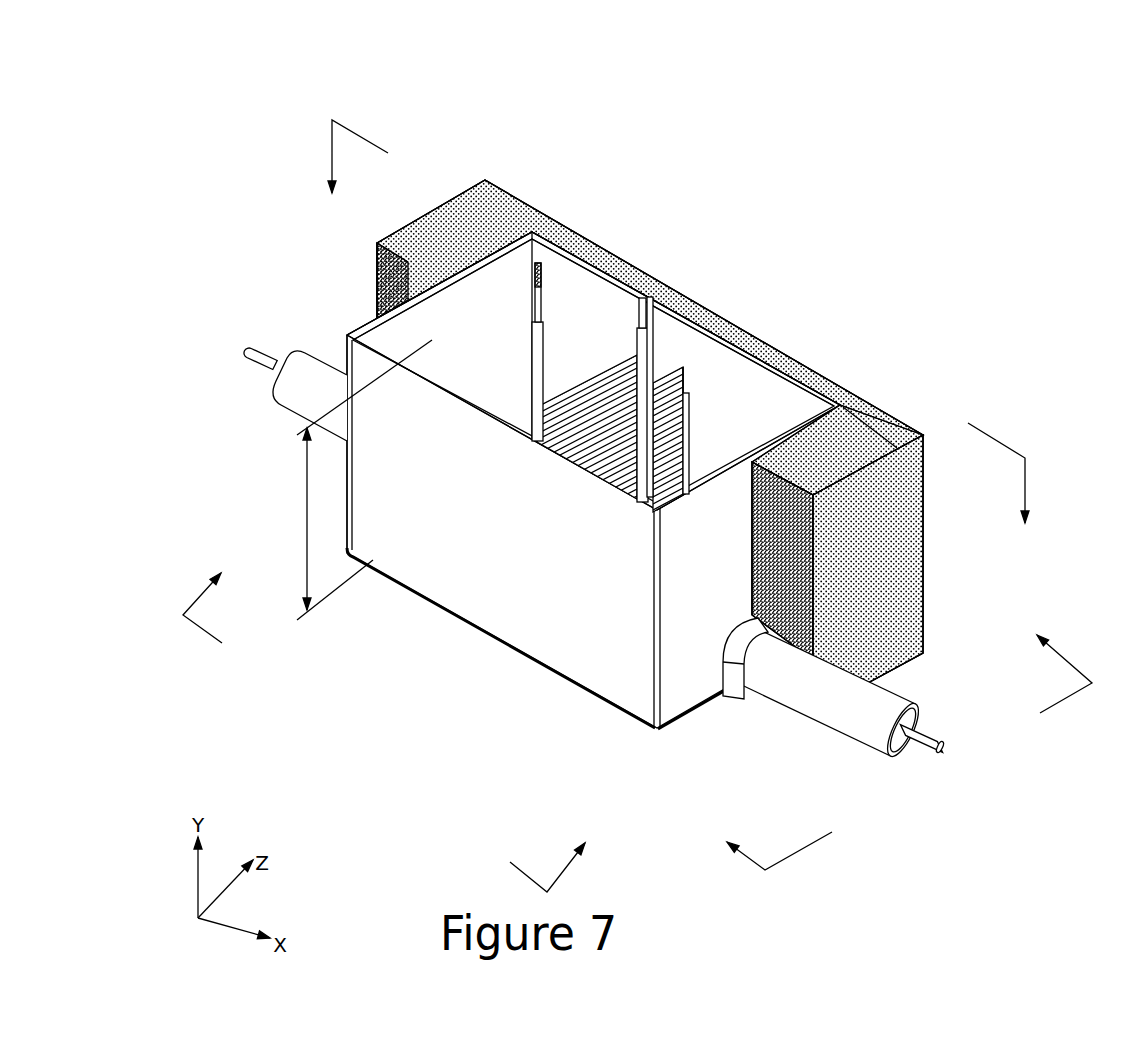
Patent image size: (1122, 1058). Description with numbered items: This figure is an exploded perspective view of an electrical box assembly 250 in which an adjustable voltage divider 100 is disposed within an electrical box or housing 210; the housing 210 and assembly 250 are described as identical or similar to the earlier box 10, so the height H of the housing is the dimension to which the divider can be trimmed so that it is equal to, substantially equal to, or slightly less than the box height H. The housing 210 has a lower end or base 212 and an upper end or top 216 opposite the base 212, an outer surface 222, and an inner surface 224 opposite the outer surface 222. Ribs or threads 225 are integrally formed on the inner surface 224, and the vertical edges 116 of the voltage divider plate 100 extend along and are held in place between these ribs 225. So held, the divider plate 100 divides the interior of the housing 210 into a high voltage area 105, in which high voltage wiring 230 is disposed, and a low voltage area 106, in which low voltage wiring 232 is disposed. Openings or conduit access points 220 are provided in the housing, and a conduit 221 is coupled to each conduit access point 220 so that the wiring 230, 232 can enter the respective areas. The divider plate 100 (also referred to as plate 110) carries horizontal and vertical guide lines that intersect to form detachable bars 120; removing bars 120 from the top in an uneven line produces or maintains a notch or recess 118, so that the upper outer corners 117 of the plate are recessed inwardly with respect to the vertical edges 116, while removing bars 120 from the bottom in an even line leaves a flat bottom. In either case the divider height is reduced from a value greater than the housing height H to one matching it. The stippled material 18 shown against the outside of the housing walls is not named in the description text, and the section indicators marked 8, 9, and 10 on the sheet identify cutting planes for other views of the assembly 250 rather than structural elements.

The insulation 18 is at (870, 428).
The voltage divider plate 100 is at (610, 431).
The high voltage area 105 is at (722, 458).
The low voltage area 106 is at (416, 343).
The voltage divider plate 110 is at (587, 451).
The detachable bars 120 is at (636, 439).
The vertical edges 116 is at (686, 392).
The upper outer corners 117 is at (531, 396).
The notch or recess 118 is at (689, 353).
The electrical box or housing 210 is at (557, 634).
The lower end, edge, or base 212 is at (613, 707).
The upper end, edge, or top 216 is at (450, 386).
The openings or conduit access points 220 is at (748, 637).
The conduit 221 is at (603, 565).
The outer surface 222 is at (484, 556).
The inner surface 224 is at (729, 428).
The ribs or threads 225 is at (790, 375).
The high voltage wiring 230 is at (653, 328).
The low voltage wiring 232 is at (545, 278).
The assembly 250 is at (200, 116).
The height of the housing H is at (307, 463).
The section line FIG. 8 is at (681, 321).
The section line FIG. 9 is at (387, 732).
The electrical box or housing 10 is at (909, 752).